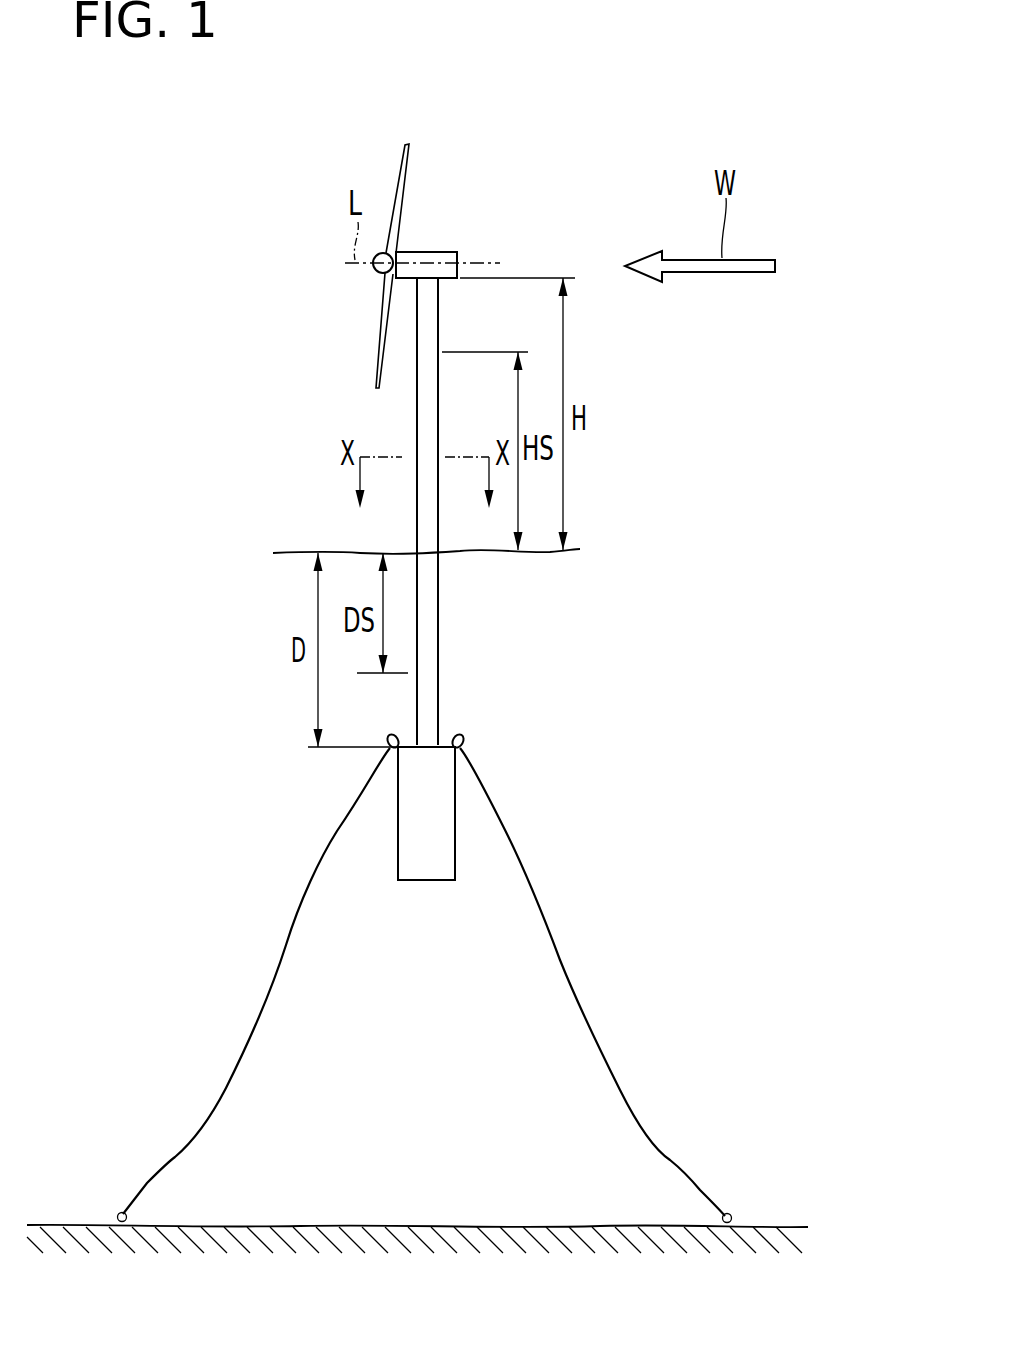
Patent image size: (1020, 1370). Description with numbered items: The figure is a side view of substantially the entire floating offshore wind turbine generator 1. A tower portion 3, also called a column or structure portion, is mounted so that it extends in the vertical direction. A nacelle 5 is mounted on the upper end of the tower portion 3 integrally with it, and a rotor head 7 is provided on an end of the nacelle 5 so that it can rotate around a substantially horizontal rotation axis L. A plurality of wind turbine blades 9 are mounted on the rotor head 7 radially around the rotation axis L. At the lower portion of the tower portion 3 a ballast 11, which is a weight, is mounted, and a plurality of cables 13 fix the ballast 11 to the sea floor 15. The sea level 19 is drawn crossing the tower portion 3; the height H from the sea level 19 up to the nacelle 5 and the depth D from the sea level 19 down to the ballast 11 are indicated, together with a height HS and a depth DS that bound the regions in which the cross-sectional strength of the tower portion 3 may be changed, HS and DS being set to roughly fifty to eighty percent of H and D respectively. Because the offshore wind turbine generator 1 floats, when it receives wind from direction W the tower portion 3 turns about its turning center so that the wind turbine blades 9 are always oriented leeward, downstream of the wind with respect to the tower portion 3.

The offshore wind turbine generator 1 is at (548, 191).
The tower portion 3 is at (416, 418).
The nacelle 5 is at (429, 257).
The rotor head 7 is at (378, 270).
The wind turbine blades 9 is at (400, 180).
The ballast 11 is at (427, 881).
The cables 13 is at (567, 942).
The sea floor 15 is at (775, 1226).
The sea level 19 is at (300, 552).